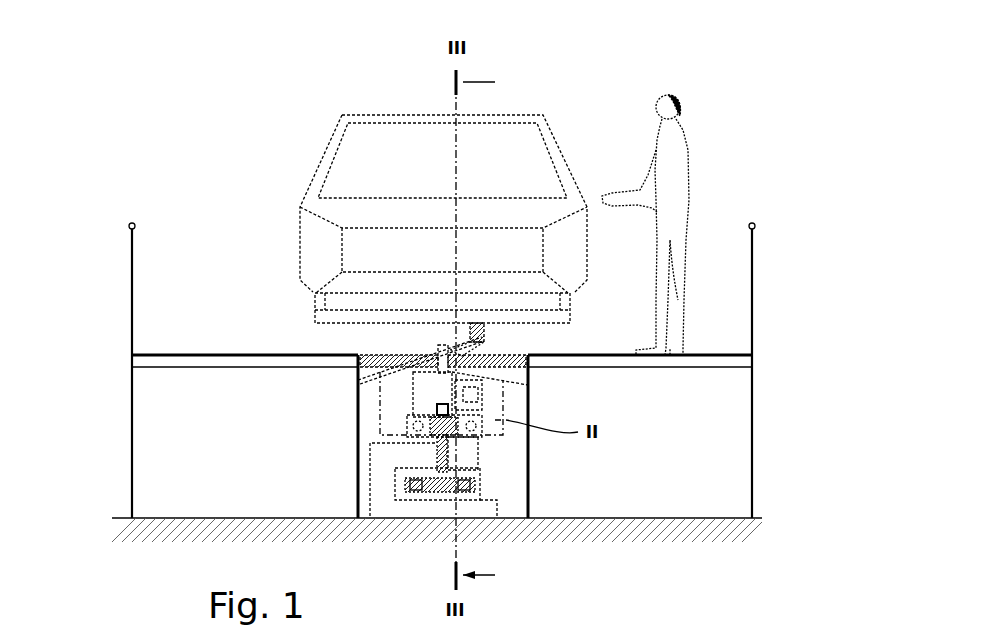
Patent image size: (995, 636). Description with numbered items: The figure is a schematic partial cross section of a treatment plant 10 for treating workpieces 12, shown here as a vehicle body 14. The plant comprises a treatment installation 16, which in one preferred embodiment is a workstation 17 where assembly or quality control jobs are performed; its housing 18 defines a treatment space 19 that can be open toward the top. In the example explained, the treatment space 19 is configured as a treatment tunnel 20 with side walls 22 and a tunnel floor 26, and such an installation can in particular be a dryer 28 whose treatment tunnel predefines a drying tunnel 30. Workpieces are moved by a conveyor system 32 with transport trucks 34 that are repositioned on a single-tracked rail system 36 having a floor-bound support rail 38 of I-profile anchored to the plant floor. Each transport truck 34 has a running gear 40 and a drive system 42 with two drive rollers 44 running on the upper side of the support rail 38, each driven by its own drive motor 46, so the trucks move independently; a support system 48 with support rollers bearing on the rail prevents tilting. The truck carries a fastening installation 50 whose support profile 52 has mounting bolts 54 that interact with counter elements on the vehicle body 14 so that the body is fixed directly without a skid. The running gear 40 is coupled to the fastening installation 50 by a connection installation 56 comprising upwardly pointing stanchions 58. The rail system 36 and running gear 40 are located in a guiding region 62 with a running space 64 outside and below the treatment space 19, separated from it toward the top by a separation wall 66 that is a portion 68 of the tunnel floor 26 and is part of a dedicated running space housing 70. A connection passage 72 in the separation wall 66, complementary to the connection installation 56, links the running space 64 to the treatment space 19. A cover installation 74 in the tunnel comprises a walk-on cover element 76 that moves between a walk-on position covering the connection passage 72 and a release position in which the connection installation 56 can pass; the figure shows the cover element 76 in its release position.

The treatment plant 10 is at (205, 60).
The workpiece 12 is at (375, 112).
The vehicle body 14 is at (424, 114).
The treatment installation 16 is at (757, 398).
The workstation 17 is at (265, 60).
The housing 18 is at (128, 234).
The treatment space 19 is at (207, 189).
The treatment tunnel 20 is at (722, 270).
The side wall 22 is at (130, 322).
The tunnel floor 26 is at (153, 353).
The dryer 28 is at (182, 138).
The drying tunnel 30 is at (165, 278).
The conveyor system 32 is at (314, 492).
The transport truck 34 is at (520, 498).
The rail system 36 is at (418, 507).
The support rail 38 is at (437, 475).
The running gear 40 is at (404, 398).
The drive system 42 is at (511, 392).
The drive roller 44 is at (444, 392).
The drive motor 46 is at (474, 410).
The support system 48 is at (410, 449).
The fastening installation 50 is at (313, 318).
The support profile 52 is at (338, 324).
The mounting bolt 54 is at (318, 302).
The connection installation 56 is at (490, 337).
The stanchion 58 is at (476, 328).
The guiding region 62 is at (540, 450).
The running space 64 is at (495, 465).
The separation wall 66 is at (383, 345).
The portion of the tunnel floor 68 is at (362, 345).
The running space housing 70 is at (370, 447).
The connection passage 72 is at (430, 350).
The cover installation 74 is at (440, 340).
The cover element 76 is at (424, 347).